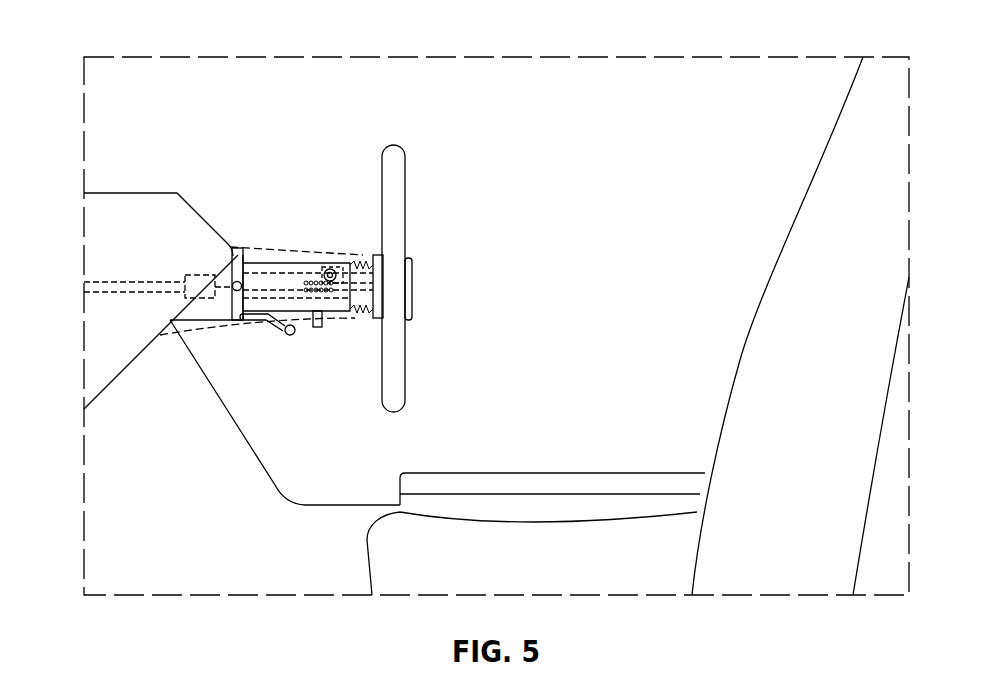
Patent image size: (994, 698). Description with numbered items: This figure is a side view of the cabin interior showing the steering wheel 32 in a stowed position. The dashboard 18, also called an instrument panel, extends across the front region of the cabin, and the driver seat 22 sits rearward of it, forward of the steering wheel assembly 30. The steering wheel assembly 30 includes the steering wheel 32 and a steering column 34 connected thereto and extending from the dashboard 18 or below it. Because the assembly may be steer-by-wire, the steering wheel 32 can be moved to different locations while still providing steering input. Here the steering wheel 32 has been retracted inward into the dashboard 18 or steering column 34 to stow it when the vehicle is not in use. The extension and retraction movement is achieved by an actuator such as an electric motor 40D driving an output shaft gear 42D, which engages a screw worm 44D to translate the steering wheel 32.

The dashboard 18 is at (124, 193).
The driver seat 22 is at (790, 240).
The steering wheel assembly 30 is at (411, 145).
The steering wheel 32 is at (382, 177).
The steering column 34 is at (205, 312).
The electric motor 40D is at (340, 258).
The output shaft gear 42D is at (345, 268).
The screw worm 44D is at (325, 305).